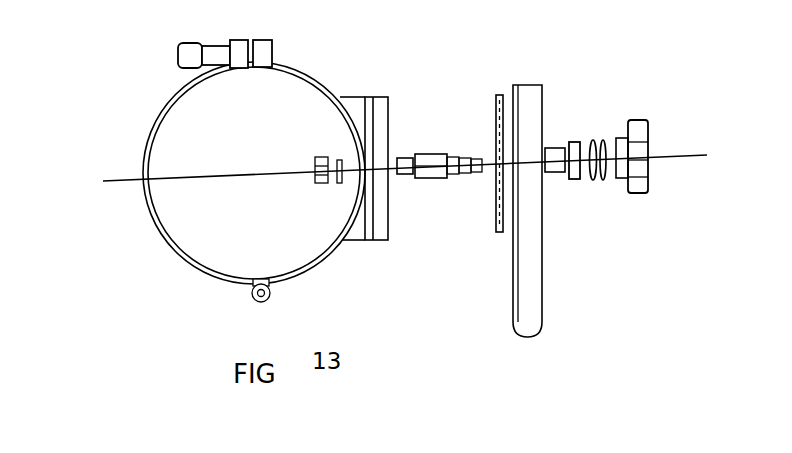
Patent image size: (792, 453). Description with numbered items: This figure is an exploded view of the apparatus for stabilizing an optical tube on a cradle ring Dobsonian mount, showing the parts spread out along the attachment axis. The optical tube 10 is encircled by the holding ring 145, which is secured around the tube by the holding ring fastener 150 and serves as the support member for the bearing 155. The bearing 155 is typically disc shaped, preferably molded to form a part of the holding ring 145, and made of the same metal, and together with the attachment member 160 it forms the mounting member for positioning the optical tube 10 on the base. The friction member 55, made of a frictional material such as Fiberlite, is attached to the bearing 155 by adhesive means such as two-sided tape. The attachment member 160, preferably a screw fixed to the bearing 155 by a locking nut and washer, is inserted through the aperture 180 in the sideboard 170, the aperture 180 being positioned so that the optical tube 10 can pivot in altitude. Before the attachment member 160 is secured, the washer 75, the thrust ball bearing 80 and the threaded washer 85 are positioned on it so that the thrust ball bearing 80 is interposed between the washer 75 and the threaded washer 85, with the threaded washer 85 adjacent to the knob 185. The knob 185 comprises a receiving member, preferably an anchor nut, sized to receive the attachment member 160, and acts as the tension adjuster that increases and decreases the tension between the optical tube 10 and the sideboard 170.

The optical tube 10 is at (205, 189).
The friction member 55 is at (500, 232).
The washer 75 is at (577, 180).
The thrust ball bearing 80 is at (593, 182).
The threaded washer 85 is at (607, 138).
The holding ring 145 is at (164, 238).
The holding ring fastener 150 is at (188, 50).
The bearing 155 is at (375, 118).
The attachment member 160 is at (427, 143).
The sideboard 170 is at (532, 315).
The aperture 180 is at (543, 140).
The knob 185 is at (650, 155).